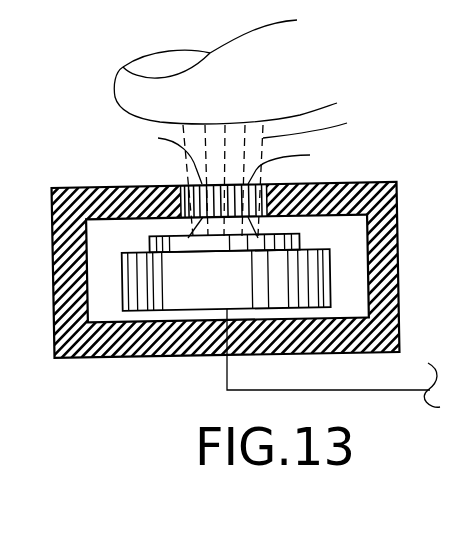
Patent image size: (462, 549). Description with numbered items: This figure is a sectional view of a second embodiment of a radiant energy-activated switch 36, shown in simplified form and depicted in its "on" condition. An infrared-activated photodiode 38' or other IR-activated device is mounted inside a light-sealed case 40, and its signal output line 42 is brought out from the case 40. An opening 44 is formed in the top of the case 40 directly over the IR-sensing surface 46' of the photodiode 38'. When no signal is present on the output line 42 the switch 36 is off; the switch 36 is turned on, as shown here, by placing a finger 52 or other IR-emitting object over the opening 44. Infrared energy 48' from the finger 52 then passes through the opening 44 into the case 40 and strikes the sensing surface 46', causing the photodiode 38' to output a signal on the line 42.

The finger 52 is at (238, 52).
The IR energy 48' is at (327, 123).
The IR-sensing surface 46' is at (160, 182).
The opening 44 is at (299, 189).
The energy-activated switch 36 is at (231, 235).
The light-sealed case 40 is at (398, 327).
The infrared-activated photodiode 38' is at (288, 271).
The signal output line 42 is at (370, 389).